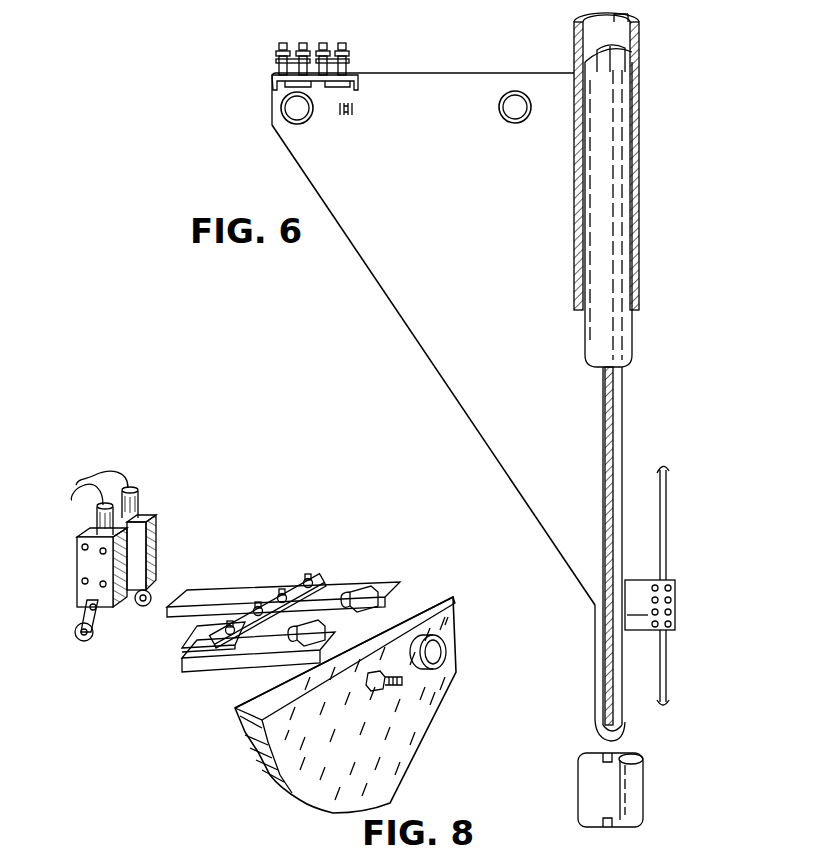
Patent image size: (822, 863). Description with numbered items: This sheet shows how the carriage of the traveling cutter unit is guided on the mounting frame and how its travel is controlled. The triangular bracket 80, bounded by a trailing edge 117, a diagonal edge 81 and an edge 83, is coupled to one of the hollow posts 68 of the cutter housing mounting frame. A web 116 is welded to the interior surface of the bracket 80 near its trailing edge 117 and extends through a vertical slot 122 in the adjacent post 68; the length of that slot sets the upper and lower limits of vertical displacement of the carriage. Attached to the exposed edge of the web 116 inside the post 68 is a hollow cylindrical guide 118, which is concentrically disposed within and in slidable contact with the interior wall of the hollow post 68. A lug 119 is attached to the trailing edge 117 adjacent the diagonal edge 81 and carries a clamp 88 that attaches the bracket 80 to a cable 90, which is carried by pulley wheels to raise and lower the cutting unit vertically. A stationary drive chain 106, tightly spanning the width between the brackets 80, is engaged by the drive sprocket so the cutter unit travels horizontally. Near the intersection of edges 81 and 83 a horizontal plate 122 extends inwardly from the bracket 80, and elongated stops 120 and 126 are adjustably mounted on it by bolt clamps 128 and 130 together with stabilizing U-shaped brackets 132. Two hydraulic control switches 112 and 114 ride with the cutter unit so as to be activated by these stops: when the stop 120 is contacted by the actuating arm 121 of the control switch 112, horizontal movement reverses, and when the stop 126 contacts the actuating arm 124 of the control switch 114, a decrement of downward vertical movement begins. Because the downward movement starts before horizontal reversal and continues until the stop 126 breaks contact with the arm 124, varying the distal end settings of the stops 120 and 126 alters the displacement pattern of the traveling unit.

In FIG. 6, the hollow post 68 is at (641, 240).
In FIG. 6, the triangular bracket 80 is at (404, 298).
In FIG. 8, the triangular bracket 80 is at (420, 722).
In FIG. 6, the diagonal edge 81 is at (437, 370).
In FIG. 6, the edge 83 is at (472, 72).
In FIG. 8, the edge 83 is at (448, 598).
In FIG. 6, the clamp 88 is at (676, 593).
In FIG. 6, the cable 90 is at (668, 503).
In FIG. 6, the stationary drive chain 106 is at (354, 108).
In FIG. 8, the hydraulic control switch 112 is at (120, 616).
In FIG. 8, the hydraulic control switch 114 is at (155, 522).
In FIG. 6, the web 116 is at (614, 412).
In FIG. 6, the trailing edge 117 is at (623, 447).
In FIG. 6, the hollow cylindrical guide 118 is at (633, 337).
In FIG. 6, the lug 119 is at (637, 606).
In FIG. 8, the elongated stop 120 is at (186, 655).
In FIG. 8, the actuating arm 121 is at (87, 642).
In FIG. 6, the vertical slot / horizontal plate 122 is at (358, 74).
In FIG. 8, the actuating arm 124 is at (150, 594).
In FIG. 8, the elongated stop 126 is at (278, 596).
In FIG. 6, the bolt clamp 128 is at (288, 48).
In FIG. 8, the bolt clamp 128 is at (310, 584).
In FIG. 6, the bolt clamp 130 is at (343, 45).
In FIG. 8, the bolt clamp 130 is at (196, 637).
In FIG. 8, the U-shaped bracket 132 is at (368, 590).